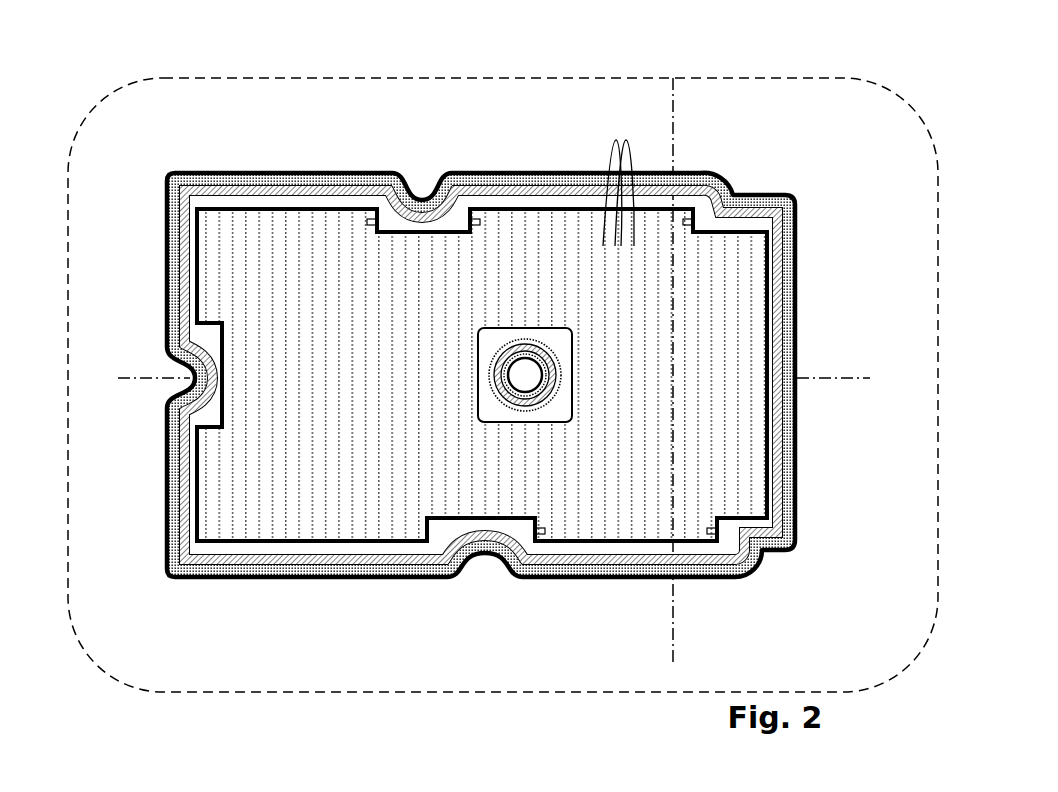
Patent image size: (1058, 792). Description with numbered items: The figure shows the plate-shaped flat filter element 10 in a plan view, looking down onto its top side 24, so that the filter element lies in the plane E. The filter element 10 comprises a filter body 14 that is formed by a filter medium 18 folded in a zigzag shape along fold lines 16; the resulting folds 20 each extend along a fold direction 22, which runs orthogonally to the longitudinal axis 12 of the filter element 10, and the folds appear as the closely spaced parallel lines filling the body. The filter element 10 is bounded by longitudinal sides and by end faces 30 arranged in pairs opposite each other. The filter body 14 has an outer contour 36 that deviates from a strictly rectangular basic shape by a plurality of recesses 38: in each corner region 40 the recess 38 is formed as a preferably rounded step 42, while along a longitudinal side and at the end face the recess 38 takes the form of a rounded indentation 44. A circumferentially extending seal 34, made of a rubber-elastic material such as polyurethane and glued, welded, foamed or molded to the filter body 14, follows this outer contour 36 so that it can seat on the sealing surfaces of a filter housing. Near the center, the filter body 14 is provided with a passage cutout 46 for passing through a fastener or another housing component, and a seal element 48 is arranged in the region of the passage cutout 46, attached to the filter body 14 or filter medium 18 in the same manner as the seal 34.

The filter element 10 is at (503, 352).
The longitudinal axis 12 is at (143, 378).
The filter body 14 is at (524, 369).
The fold lines 16 is at (618, 179).
The filter medium 18 is at (524, 369).
The folds 20 is at (524, 369).
The fold direction 22 is at (673, 617).
The top side 24 is at (752, 267).
The end faces 30 is at (474, 373).
The seal 34 is at (182, 472).
The outer contour 36 is at (230, 168).
The recesses 38 is at (474, 373).
The corner region 40 is at (474, 373).
The rounded step 42 is at (474, 373).
The indentation 44 is at (474, 373).
The passage cutout 46 is at (538, 367).
The seal element 48 is at (502, 362).
The plane E is at (938, 452).